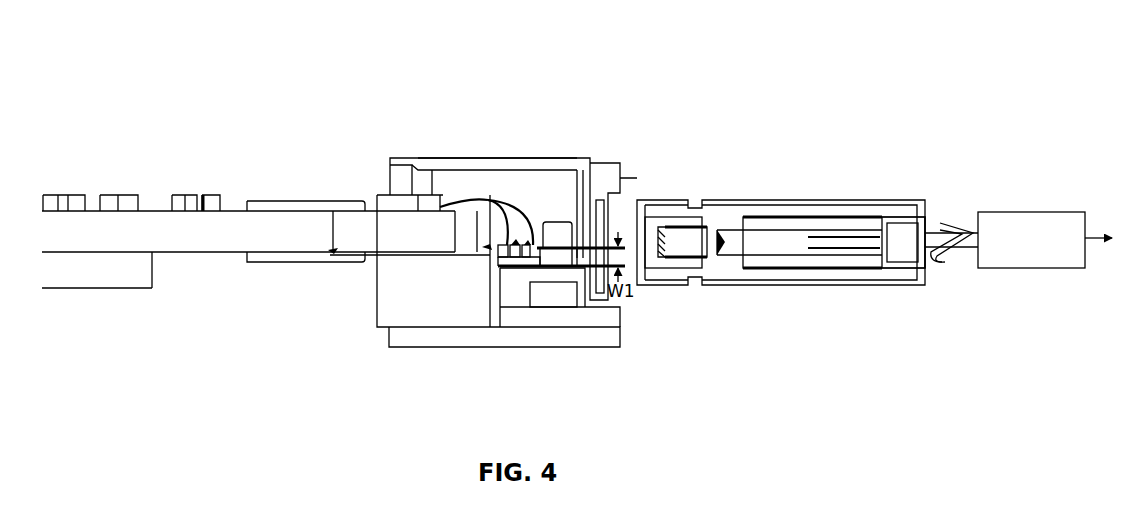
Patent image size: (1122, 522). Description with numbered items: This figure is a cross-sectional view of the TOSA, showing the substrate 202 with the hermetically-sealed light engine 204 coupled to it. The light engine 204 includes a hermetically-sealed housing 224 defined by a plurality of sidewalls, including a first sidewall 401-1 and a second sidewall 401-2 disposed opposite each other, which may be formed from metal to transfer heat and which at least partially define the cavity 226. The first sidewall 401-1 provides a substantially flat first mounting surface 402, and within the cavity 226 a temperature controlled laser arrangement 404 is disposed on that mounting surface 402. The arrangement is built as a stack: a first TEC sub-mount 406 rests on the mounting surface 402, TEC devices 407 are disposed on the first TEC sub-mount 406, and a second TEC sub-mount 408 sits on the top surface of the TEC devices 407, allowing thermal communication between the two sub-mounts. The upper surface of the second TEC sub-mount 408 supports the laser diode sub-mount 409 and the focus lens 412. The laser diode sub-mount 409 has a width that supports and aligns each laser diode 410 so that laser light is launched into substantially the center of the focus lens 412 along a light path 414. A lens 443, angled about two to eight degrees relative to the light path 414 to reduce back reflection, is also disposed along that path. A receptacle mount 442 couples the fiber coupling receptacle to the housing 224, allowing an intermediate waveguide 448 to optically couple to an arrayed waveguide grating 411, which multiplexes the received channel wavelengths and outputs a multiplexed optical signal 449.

The substrate 202 is at (288, 122).
The hermetically-sealed light engine 204 is at (585, 57).
The hermetically-sealed housing 224 is at (532, 158).
The cavity 226 is at (445, 175).
The first sidewall 401-1 is at (619, 341).
The second sidewall 401-2 is at (472, 152).
The first mounting surface 402 is at (455, 325).
The temperature controlled laser arrangement 404 is at (560, 207).
The first TEC sub-mount 406 is at (548, 316).
The TEC devices 407 is at (548, 294).
The second TEC sub-mount 408 is at (512, 276).
The laser diode sub-mount 409 is at (500, 264).
The laser diode 410 is at (515, 240).
The arrayed waveguide grating 411 is at (1015, 263).
The focus lens 412 is at (552, 222).
The light path 414 is at (580, 247).
The receptacle mount 442 is at (633, 178).
The lens 443 is at (612, 203).
The intermediate waveguide 448 is at (958, 256).
The multiplexed optical signal 449 is at (1102, 256).